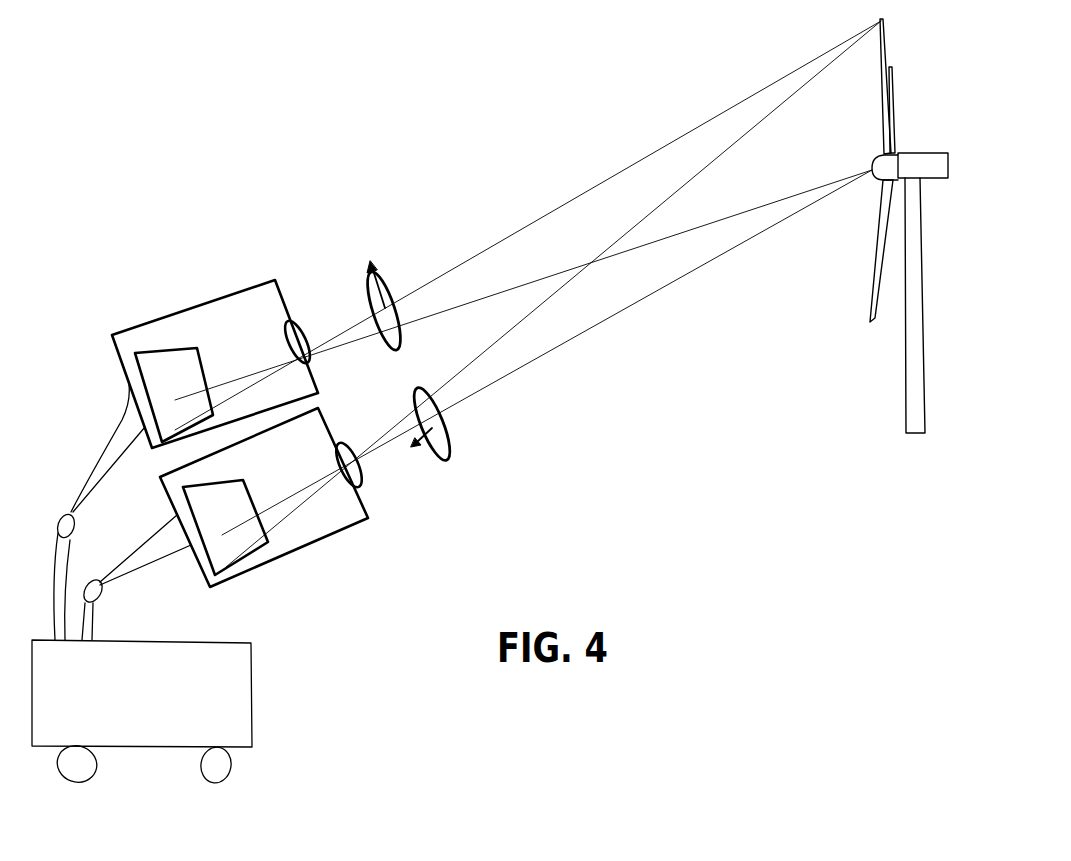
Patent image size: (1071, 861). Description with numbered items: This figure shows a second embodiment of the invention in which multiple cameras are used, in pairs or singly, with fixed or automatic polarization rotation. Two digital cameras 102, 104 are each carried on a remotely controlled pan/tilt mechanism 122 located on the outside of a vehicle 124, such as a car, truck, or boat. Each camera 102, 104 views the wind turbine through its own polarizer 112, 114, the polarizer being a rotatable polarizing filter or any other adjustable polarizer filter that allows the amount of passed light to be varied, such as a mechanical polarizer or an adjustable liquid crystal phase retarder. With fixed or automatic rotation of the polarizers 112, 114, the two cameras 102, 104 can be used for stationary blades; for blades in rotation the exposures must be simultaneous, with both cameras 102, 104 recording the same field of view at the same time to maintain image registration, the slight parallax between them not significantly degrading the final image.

The camera 102 is at (225, 296).
The camera 104 is at (327, 538).
The rotatable polarizer 112 is at (383, 278).
The polarizer 114 is at (447, 438).
The pan/tilt mechanism 122 is at (72, 510).
The vehicle 124 is at (155, 748).